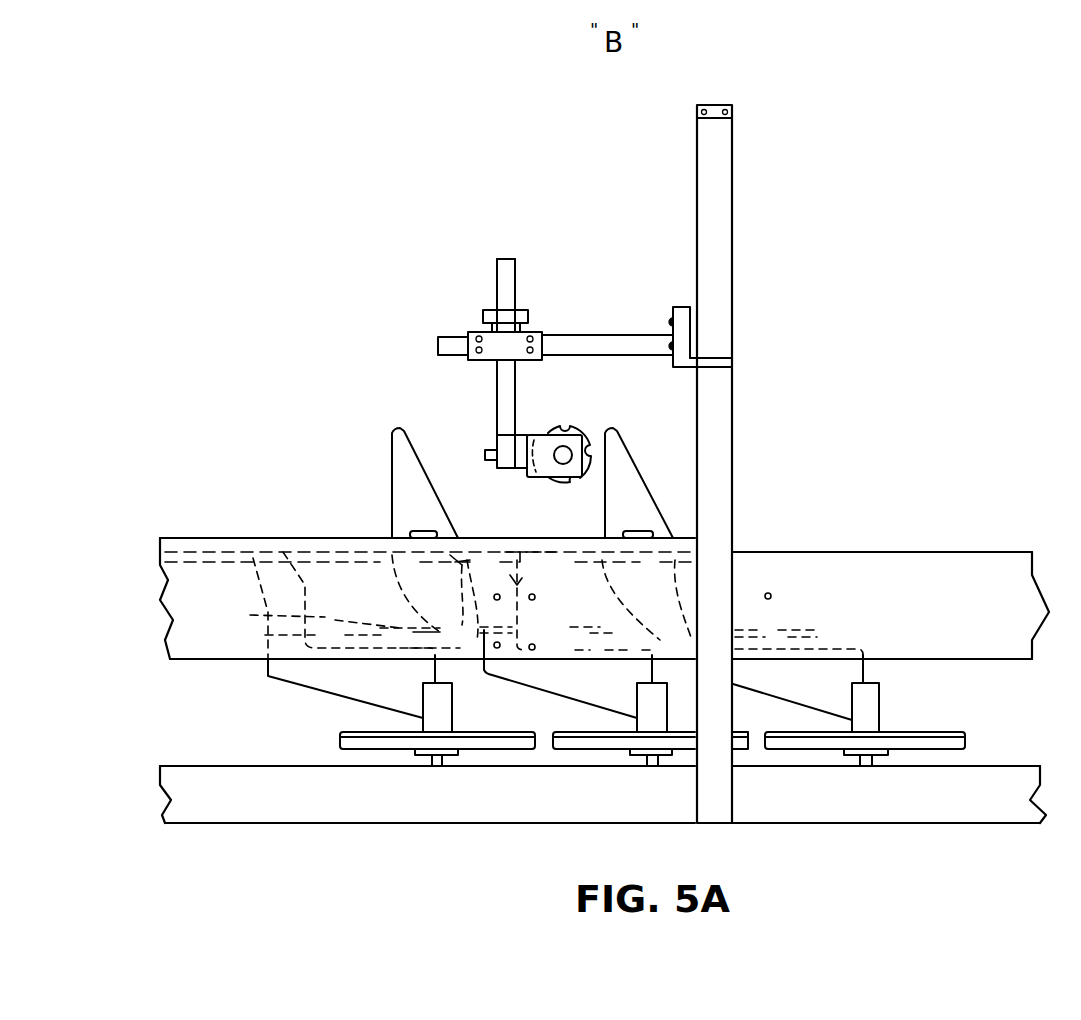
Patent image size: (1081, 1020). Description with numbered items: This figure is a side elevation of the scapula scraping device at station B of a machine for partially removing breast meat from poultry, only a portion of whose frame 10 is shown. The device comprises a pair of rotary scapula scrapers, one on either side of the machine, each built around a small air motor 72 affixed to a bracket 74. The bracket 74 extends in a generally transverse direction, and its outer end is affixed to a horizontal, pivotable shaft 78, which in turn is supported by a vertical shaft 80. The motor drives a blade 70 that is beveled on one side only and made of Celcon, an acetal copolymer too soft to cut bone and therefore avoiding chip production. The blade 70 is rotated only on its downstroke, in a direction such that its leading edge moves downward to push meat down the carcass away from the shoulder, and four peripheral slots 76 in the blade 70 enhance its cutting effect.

The frame 10 is at (730, 513).
The blade 70 is at (575, 430).
The air motor 72 is at (527, 445).
The bracket 74 is at (440, 338).
The peripheral slots 76 is at (572, 483).
The horizontal pivotable shaft 78 is at (485, 455).
The vertical shaft 80 is at (500, 268).